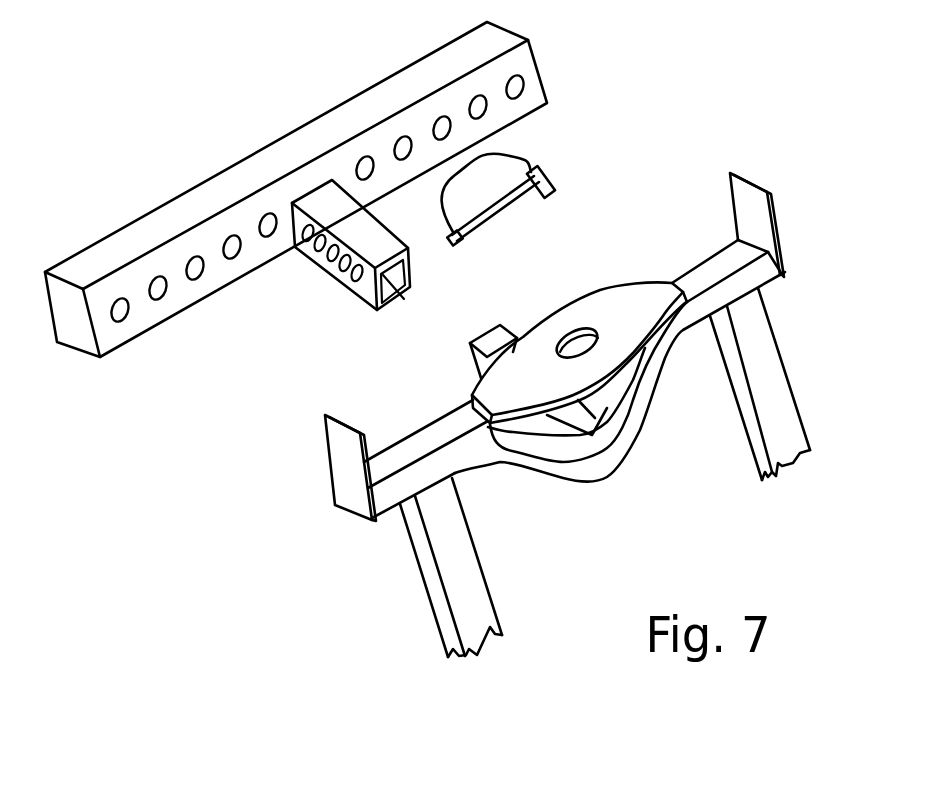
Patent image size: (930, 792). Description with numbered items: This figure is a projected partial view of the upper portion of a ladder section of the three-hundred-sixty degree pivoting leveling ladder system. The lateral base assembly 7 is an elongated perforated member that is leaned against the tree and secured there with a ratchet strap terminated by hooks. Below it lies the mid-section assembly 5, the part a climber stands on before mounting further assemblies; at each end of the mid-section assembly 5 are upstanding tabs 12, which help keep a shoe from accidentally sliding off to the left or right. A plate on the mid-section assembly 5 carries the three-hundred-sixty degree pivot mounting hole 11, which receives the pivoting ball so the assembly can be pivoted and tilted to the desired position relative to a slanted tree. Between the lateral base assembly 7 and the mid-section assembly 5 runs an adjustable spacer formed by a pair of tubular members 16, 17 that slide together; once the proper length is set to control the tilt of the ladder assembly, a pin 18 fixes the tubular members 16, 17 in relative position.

The mid-section assembly 5 is at (745, 285).
The lateral base assembly 7 is at (523, 60).
The 360 degree pivot mounting hole 11 is at (557, 353).
The tabs 12 is at (347, 488).
The tubular member 16 is at (360, 292).
The tubular member 17 is at (510, 333).
The pin 18 is at (553, 181).